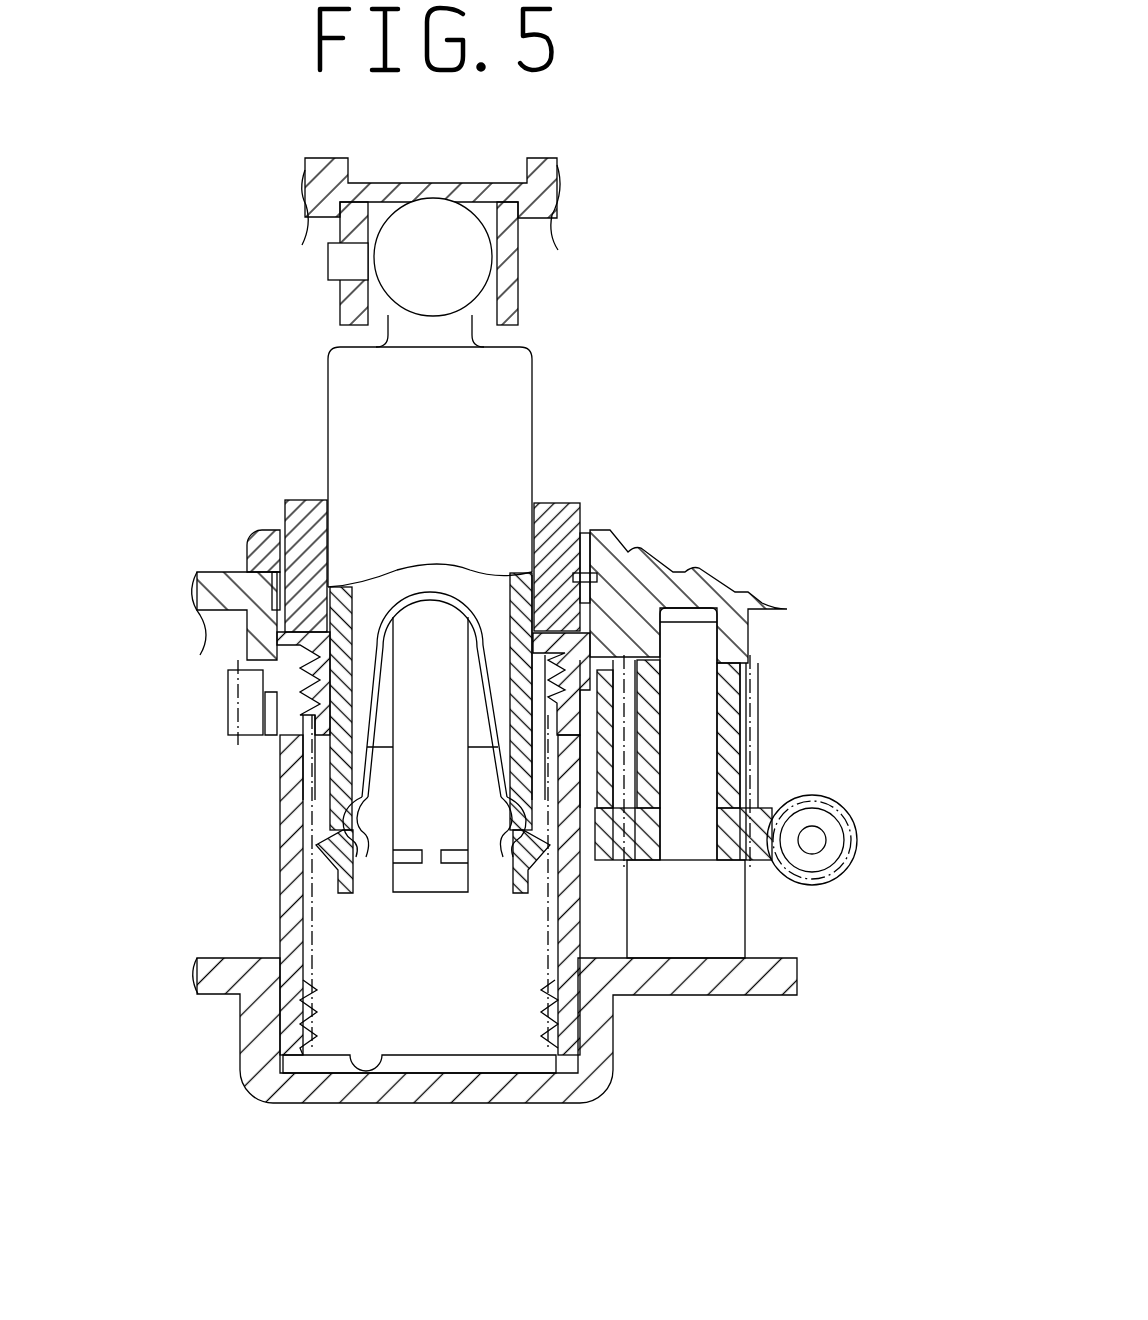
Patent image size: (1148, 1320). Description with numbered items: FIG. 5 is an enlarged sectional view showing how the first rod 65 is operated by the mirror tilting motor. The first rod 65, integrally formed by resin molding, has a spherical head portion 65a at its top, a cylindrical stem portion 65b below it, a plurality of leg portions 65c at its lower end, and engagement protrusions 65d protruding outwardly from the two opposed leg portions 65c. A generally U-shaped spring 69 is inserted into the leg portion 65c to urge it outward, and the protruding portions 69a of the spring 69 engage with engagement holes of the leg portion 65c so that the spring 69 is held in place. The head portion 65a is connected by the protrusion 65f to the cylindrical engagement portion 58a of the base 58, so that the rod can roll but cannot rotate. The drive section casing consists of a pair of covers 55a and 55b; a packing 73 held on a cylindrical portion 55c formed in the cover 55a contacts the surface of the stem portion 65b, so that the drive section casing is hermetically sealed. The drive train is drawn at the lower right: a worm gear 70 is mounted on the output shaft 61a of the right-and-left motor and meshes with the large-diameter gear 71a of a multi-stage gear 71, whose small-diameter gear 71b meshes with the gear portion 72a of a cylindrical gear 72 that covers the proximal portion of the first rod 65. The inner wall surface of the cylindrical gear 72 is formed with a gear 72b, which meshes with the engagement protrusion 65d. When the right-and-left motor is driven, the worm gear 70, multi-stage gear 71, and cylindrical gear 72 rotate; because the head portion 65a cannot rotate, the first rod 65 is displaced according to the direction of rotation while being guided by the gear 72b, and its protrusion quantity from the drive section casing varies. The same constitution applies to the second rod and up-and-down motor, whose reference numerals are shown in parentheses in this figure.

The base 58 is at (545, 186).
The cylindrical engagement portion 58a is at (505, 318).
The spherical head portion 65a is at (470, 268).
The protrusion 65f is at (334, 263).
The first rod 65 is at (525, 451).
The cylindrical stem portion 65b is at (515, 468).
The leg portion 65c is at (332, 748).
The engagement protrusion 65d is at (322, 852).
The spring 69 is at (394, 683).
The protruding portions 69a is at (372, 822).
The packing 73 is at (290, 503).
The cylindrical portion 55c is at (257, 537).
The cover 55a is at (215, 596).
The cylindrical gear 72 is at (341, 898).
The gear portion 72a is at (232, 700).
The gear 72b is at (328, 1015).
The multi-stage gear 71 is at (757, 783).
The small-diameter gear 71b is at (755, 768).
The large-diameter gear 71a is at (772, 808).
The worm gear 70 is at (864, 871).
The output shaft 61a is at (812, 840).
The cover 55b is at (790, 978).